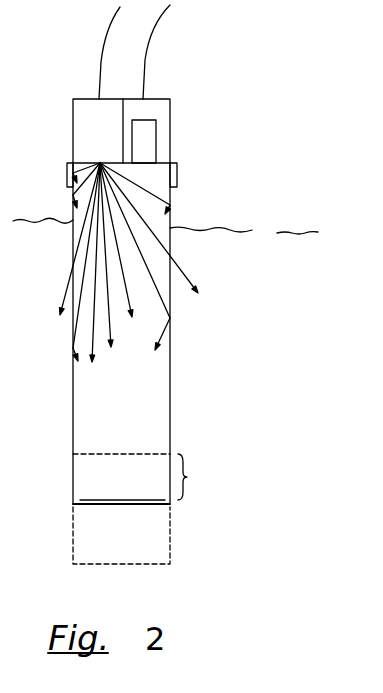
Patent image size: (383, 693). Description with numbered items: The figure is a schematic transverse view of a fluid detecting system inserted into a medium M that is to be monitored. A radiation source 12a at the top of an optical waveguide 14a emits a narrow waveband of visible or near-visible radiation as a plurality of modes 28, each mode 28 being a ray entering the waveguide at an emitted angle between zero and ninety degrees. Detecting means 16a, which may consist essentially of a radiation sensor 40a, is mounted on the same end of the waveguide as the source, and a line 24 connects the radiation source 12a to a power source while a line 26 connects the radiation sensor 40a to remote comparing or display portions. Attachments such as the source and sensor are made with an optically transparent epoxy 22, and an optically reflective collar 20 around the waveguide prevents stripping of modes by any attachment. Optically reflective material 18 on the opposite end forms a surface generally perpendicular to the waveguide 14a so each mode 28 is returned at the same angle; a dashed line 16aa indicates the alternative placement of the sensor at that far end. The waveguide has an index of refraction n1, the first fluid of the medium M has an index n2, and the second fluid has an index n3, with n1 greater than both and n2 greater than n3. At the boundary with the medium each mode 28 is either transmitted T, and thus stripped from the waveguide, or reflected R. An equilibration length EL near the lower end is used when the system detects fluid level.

The radiation source 12a is at (80, 103).
The detecting means 16a is at (157, 100).
The radiation sensor 40a is at (148, 138).
The line 24 is at (107, 38).
The line 26 is at (152, 35).
The optically reflective collar 20 is at (67, 177).
The optical waveguide 14a is at (157, 405).
The optically transparent epoxy 22 is at (85, 160).
The mode 28 is at (147, 188).
The reflected R is at (172, 213).
The transmitted T is at (190, 268).
The medium M is at (165, 229).
The index of refraction of second fluid n3 is at (263, 177).
The index of refraction of first fluid n2 is at (265, 320).
The index of refraction of optical waveguide n1 is at (120, 396).
The equilibration length EL is at (145, 477).
The optically reflective material 18 is at (159, 505).
The dashed line 16aa is at (172, 537).